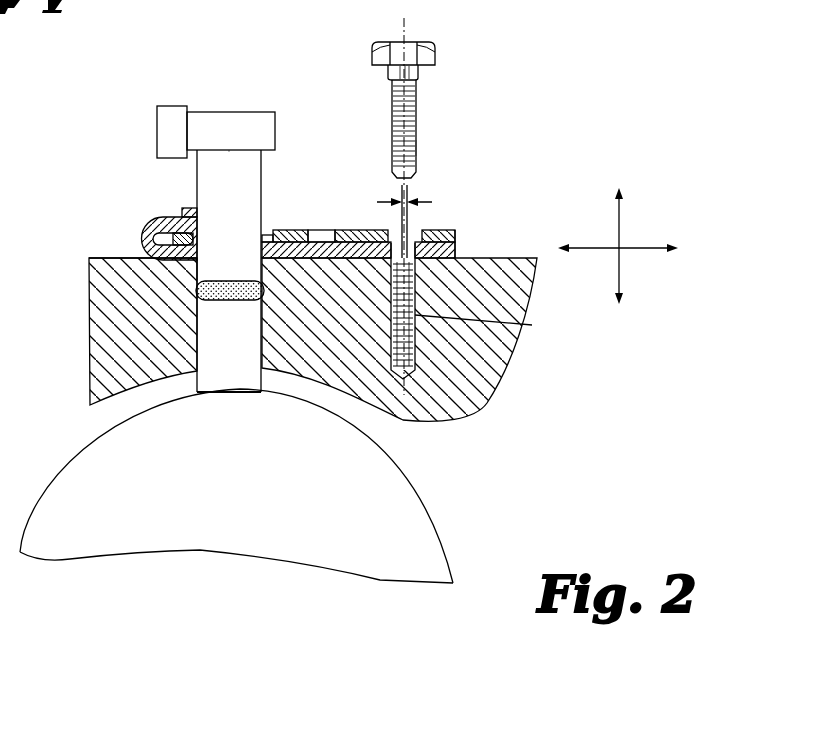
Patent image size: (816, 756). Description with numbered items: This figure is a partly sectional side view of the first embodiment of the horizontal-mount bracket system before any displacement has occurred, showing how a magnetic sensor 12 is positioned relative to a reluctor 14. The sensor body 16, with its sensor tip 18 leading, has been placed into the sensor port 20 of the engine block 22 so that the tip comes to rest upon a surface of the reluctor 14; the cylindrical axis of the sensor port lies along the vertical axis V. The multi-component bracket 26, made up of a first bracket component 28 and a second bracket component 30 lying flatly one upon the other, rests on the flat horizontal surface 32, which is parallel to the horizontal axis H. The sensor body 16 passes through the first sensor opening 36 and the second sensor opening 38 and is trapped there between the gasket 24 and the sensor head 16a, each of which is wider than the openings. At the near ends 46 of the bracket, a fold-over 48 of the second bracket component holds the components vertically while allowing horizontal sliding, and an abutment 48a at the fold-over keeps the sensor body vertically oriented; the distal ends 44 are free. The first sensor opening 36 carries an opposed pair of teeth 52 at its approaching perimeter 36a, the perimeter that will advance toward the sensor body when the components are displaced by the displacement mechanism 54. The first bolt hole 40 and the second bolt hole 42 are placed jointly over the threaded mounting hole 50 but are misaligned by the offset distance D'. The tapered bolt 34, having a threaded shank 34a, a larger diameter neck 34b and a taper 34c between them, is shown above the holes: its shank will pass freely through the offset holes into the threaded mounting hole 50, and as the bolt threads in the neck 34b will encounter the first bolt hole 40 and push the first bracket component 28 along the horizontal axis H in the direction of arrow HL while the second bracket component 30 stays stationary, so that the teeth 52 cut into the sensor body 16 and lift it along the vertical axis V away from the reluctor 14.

The magnetic sensor 12 is at (232, 226).
The reluctor 14 is at (273, 486).
The sensor body 16 is at (252, 285).
The sensor head 16a is at (245, 110).
The sensor tip 18 is at (203, 397).
The sensor port 20 is at (199, 346).
The engine block 22 is at (420, 305).
The gasket 24 is at (109, 291).
The multi-component bracket 26 is at (323, 223).
The first bracket component 28 is at (336, 241).
The second bracket component 30 is at (412, 178).
The horizontal surface 32 is at (93, 257).
The tapered bolt 34 is at (404, 99).
The threaded shank 34a is at (418, 126).
The neck 34b is at (372, 66).
The taper 34c is at (415, 78).
The first sensor opening 36 is at (200, 250).
The approaching perimeter 36a is at (268, 289).
The second sensor opening 38 is at (203, 252).
The first bolt hole 40 is at (400, 230).
The second bolt hole 42 is at (400, 283).
The distal ends 44 is at (458, 225).
The near ends 46 is at (129, 199).
The fold-over 48 is at (140, 240).
The abutment 48a is at (186, 209).
The threaded mounting hole 50 is at (489, 326).
The teeth 52 is at (258, 245).
The displacement mechanism 54 is at (425, 148).
The arrow HL is at (461, 236).
The vertical axis V is at (620, 215).
The horizontal axis H is at (637, 252).
The offset distance D' is at (416, 199).